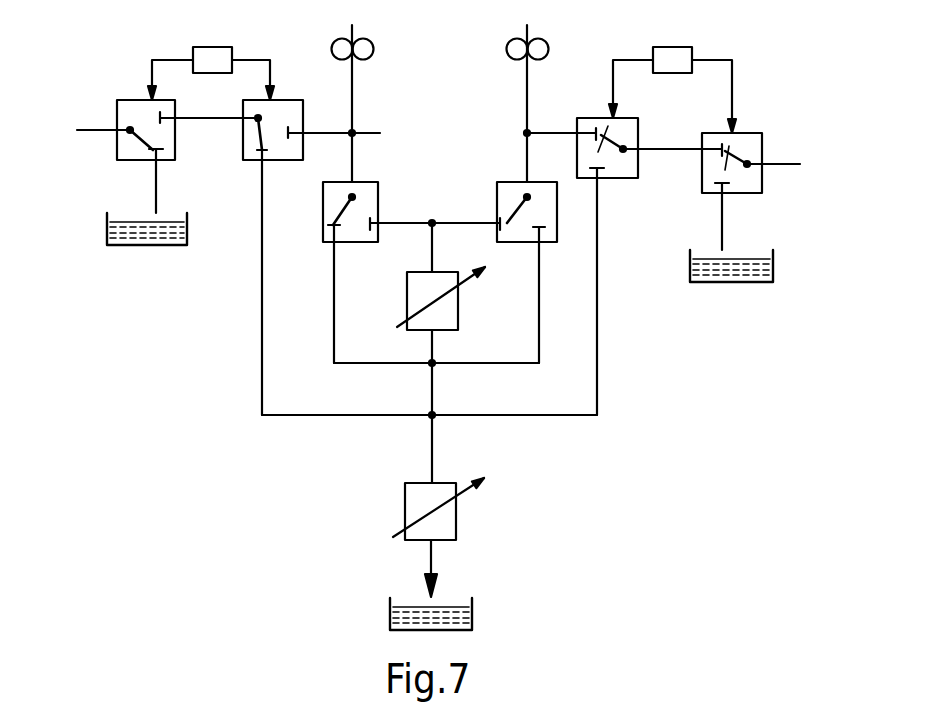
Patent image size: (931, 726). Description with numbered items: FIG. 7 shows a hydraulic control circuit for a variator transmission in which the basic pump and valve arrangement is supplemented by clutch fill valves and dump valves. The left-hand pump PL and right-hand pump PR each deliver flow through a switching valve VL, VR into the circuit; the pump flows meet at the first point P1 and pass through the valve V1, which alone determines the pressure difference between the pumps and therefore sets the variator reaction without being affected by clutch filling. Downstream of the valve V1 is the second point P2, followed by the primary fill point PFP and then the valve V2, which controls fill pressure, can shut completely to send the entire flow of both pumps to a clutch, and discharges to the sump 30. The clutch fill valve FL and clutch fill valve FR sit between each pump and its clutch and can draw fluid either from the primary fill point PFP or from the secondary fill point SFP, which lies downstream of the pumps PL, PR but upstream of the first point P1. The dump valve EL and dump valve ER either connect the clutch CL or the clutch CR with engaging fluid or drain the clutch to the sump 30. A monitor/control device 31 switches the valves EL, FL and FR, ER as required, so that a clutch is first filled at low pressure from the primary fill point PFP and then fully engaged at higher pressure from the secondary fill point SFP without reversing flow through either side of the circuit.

The sump 30 is at (107, 229).
The monitor/control device 31 is at (215, 47).
The dump valve EL is at (135, 100).
The clutch fill valve FL is at (297, 77).
The dump valve ER is at (763, 107).
The clutch fill valve FR is at (643, 90).
The clutch CL is at (86, 132).
The clutch CR is at (787, 166).
The pump PL is at (390, 27).
The pump PR is at (565, 26).
The secondary fill point SFP is at (350, 129).
The first point P1 is at (433, 223).
The second point P2 is at (428, 366).
The primary fill point PFP is at (428, 417).
The valve V1 is at (480, 312).
The valve V2 is at (480, 517).
The left center valve VL is at (350, 272).
The right center valve VR is at (527, 272).